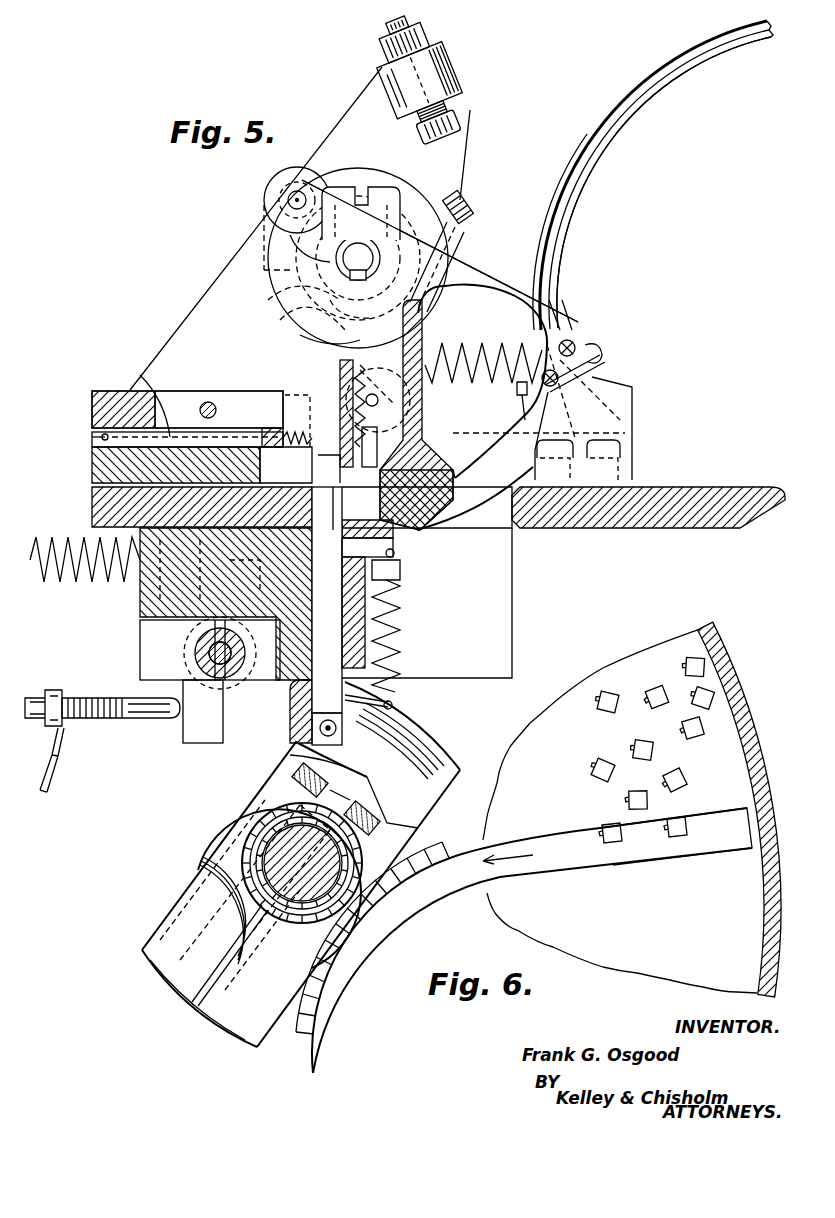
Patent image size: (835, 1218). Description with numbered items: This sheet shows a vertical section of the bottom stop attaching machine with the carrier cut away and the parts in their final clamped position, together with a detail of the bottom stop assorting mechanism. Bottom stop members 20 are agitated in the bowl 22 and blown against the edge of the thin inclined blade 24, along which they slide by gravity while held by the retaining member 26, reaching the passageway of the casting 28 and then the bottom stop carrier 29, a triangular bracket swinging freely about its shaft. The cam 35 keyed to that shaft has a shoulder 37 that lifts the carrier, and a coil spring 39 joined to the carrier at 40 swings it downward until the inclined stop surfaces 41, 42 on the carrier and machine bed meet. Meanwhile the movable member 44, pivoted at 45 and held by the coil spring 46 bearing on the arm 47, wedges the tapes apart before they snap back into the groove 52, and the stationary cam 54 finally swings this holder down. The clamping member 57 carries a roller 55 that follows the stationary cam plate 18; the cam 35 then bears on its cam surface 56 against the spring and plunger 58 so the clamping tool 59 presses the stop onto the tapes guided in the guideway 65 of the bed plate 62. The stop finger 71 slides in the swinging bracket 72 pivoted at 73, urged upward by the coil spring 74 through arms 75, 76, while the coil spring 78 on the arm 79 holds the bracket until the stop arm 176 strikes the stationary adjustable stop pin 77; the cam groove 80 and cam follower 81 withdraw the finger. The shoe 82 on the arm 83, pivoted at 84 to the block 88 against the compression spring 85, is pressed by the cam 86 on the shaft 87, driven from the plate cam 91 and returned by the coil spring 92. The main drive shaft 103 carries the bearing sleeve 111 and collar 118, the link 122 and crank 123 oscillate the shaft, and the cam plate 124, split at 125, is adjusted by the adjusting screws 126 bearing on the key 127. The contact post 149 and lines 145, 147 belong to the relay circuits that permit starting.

In FIG. 5, the stationary cam plate 18 is at (440, 331).
In FIG. 5, the bottom stop member 20 is at (338, 478).
In FIG. 6, the bottom stop member 20 is at (604, 825).
In FIG. 6, the bowl 22 is at (657, 662).
In FIG. 5, the blade 24 is at (747, 47).
In FIG. 6, the blade 24 is at (605, 857).
In FIG. 5, the retaining member 26 is at (698, 53).
In FIG. 5, the casting 28 is at (625, 413).
In FIG. 5, the bottom stop carrier 29 is at (488, 277).
In FIG. 5, the cam 35 is at (302, 341).
In FIG. 5, the shoulder 37 is at (378, 368).
In FIG. 5, the coil spring 39 is at (525, 380).
In FIG. 5, the spring connection point 40 is at (572, 340).
In FIG. 5, the inclined stop surface 41 is at (371, 413).
In FIG. 5, the inclined stop surface 42 is at (318, 456).
In FIG. 5, the movable member 44 is at (395, 553).
In FIG. 5, the pivot 45 is at (427, 532).
In FIG. 5, the coil spring 46 is at (448, 482).
In FIG. 5, the arm 47 is at (440, 512).
In FIG. 5, the groove 52 is at (374, 250).
In FIG. 5, the stationary cam 54 is at (450, 63).
In FIG. 5, the roller 55 is at (470, 117).
In FIG. 5, the cam surface 56 is at (468, 208).
In FIG. 5, the clamping member 57 is at (455, 381).
In FIG. 5, the spring and plunger 58 is at (352, 190).
In FIG. 5, the clamping tool 59 is at (512, 337).
In FIG. 5, the bed plate 62 is at (668, 528).
In FIG. 5, the guideway 65 is at (92, 462).
In FIG. 5, the stop finger 71 is at (327, 600).
In FIG. 5, the swinging bracket 72 is at (285, 690).
In FIG. 5, the pivot 73 is at (195, 655).
In FIG. 5, the coil spring 74 is at (403, 630).
In FIG. 5, the arm 75 is at (400, 706).
In FIG. 5, the arm 76 is at (402, 568).
In FIG. 5, the stationary adjustable stop pin 77 is at (135, 708).
In FIG. 5, the coil spring 78 is at (80, 570).
In FIG. 5, the arm 79 is at (140, 600).
In FIG. 5, the cam groove 80 is at (420, 772).
In FIG. 5, the cam follower 81 is at (310, 730).
In FIG. 5, the shoe 82 is at (278, 430).
In FIG. 5, the arm 83 is at (145, 397).
In FIG. 5, the pivot 84 is at (92, 437).
In FIG. 5, the compression spring 85 is at (255, 432).
In FIG. 5, the cam 86 is at (223, 395).
In FIG. 5, the shaft 87 is at (205, 402).
In FIG. 5, the block 88 is at (105, 392).
In FIG. 5, the plate cam 91 is at (292, 310).
In FIG. 5, the coil spring 92 is at (302, 436).
In FIG. 5, the main drive shaft 103 is at (280, 860).
In FIG. 5, the bearing sleeve 111 is at (264, 818).
In FIG. 5, the collar 118 is at (250, 836).
In FIG. 5, the link 122 is at (290, 382).
In FIG. 5, the crank 123 is at (275, 184).
In FIG. 5, the cam plate 124 is at (226, 858).
In FIG. 5, the split 125 is at (200, 1005).
In FIG. 5, the adjusting screws 126 is at (372, 812).
In FIG. 5, the key 127 is at (300, 790).
In FIG. 5, the line 145 is at (50, 785).
In FIG. 5, the line 147 is at (598, 352).
In FIG. 5, the contact post 149 is at (560, 378).
In FIG. 5, the stop arm 176 is at (195, 718).